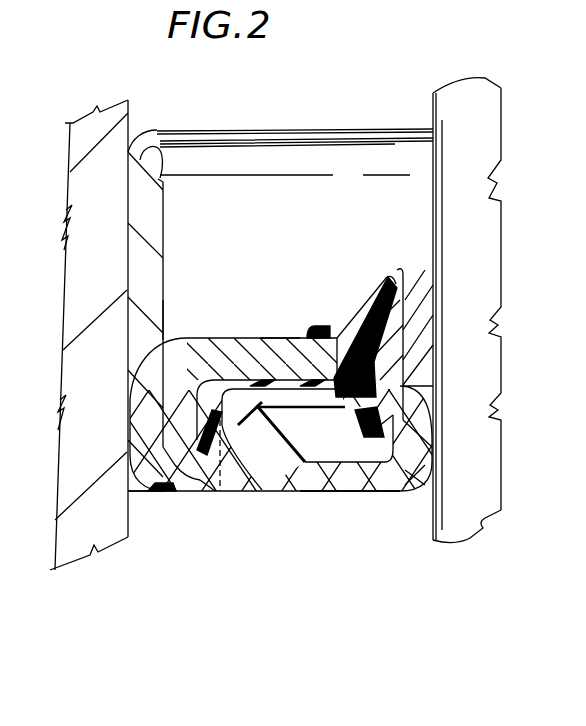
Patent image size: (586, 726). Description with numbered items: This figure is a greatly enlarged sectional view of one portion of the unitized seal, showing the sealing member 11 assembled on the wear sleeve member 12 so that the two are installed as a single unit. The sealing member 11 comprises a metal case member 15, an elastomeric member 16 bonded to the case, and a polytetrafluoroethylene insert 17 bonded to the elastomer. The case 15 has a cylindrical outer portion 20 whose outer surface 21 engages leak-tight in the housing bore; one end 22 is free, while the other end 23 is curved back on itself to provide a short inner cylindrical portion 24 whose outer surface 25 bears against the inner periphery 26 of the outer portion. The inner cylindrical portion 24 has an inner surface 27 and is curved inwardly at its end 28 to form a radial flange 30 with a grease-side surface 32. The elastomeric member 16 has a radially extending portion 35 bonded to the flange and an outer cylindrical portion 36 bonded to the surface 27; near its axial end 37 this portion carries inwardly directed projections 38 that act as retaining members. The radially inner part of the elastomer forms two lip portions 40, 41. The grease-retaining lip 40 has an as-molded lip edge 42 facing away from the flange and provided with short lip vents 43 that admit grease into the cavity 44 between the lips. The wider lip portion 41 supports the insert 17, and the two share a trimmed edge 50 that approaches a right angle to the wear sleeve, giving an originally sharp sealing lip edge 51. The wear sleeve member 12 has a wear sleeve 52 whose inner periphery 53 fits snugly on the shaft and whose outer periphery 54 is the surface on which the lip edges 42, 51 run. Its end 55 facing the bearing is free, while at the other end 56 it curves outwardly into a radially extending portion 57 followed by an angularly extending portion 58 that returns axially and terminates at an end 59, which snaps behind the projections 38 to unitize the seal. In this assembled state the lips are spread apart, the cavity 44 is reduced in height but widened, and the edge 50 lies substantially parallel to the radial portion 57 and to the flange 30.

The sealing member 11 is at (163, 507).
The wear sleeve member 12 is at (368, 506).
The case member 15 is at (244, 286).
The elastomeric member 16 is at (285, 227).
The polytetrafluoroethylene insert 17 is at (405, 421).
The cylindrical outer portion 20 is at (158, 186).
The outer surface 21 is at (128, 249).
The free end 22 is at (152, 131).
The curved end 23 is at (161, 491).
The inner cylindrical portion 24 is at (203, 418).
The outer surface of inner cylindrical portion 25 is at (200, 412).
The inner periphery 26 is at (165, 322).
The inner surface 27 is at (200, 422).
The curved end of inner portion 28 is at (175, 345).
The radial flange 30 is at (228, 345).
The grease-side surface 32 is at (268, 338).
The radially extending portion 35 is at (300, 365).
The outer cylindrical portion 36 is at (206, 408).
The axial end 37 is at (207, 491).
The projections 38 is at (262, 486).
The grease-retaining lip portion 40 is at (365, 313).
The sealing lip portion 41 is at (355, 430).
The lip edge 42 is at (404, 272).
The lip vents 43 is at (392, 284).
The cavity 44 is at (433, 328).
The trimmed edge 50 is at (362, 438).
The sealing lip edge 51 is at (412, 440).
The wear sleeve 52 is at (434, 300).
The inner periphery of wear sleeve 53 is at (430, 358).
The outer periphery of wear sleeve 54 is at (405, 387).
The free end of wear sleeve 55 is at (440, 263).
The curved end of wear sleeve 56 is at (406, 486).
The radially extending portion 57 is at (358, 462).
The angularly extending portion 58 is at (278, 456).
The end of angular portion 59 is at (242, 428).